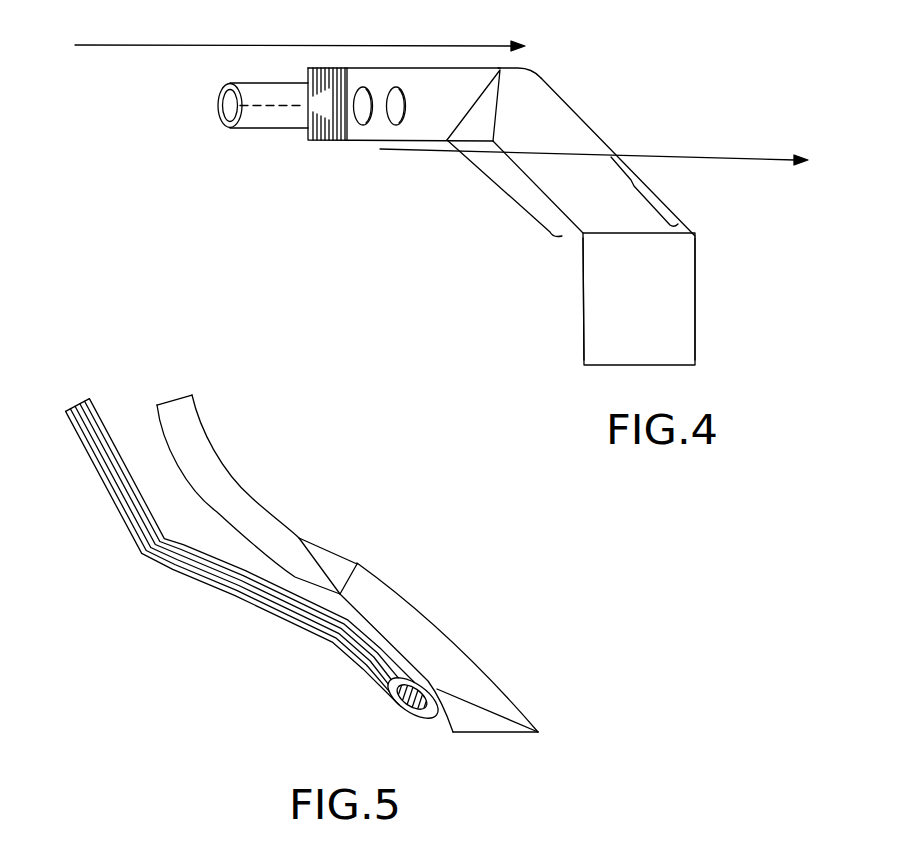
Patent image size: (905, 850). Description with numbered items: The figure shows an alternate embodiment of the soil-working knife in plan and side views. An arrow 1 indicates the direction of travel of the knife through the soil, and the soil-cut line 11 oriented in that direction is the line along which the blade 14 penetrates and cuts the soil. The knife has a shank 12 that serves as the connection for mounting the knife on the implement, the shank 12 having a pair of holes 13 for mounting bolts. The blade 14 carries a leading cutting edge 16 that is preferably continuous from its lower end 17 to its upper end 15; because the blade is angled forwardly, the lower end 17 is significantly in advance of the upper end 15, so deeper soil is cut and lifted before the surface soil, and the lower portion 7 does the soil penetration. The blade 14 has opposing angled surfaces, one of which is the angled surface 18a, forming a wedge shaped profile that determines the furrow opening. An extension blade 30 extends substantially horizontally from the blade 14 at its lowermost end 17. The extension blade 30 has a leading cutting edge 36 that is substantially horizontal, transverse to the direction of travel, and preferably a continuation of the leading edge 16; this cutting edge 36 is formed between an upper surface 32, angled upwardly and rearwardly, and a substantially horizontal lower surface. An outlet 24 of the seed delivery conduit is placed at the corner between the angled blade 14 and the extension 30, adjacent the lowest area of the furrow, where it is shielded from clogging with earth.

In FIG. 4, the arrow 1 is at (267, 45).
In FIG. 4, the soil-cut line 11 is at (713, 158).
In FIG. 4, the holes 13 is at (394, 88).
In FIG. 4, the upper end of the cutting edge 15 is at (529, 71).
In FIG. 4, the cutting edge 16 is at (604, 130).
In FIG. 5, the cutting edge 16 is at (424, 621).
In FIG. 4, the lower end of the cutting edge 17 is at (703, 235).
In FIG. 5, the lower end of the cutting edge 17 is at (539, 734).
In FIG. 4, the lower portion 7 is at (558, 187).
In FIG. 4, the outlet 24 is at (553, 234).
In FIG. 5, the outlet 24 is at (400, 709).
In FIG. 4, the extension blade 30 is at (583, 311).
In FIG. 4, the upper surface 32 is at (678, 325).
In FIG. 4, the leading cutting edge 36 is at (695, 295).
In FIG. 5, the shank 12 is at (232, 470).
In FIG. 5, the blade 14 is at (346, 556).
In FIG. 5, the angled surface 18a is at (482, 700).